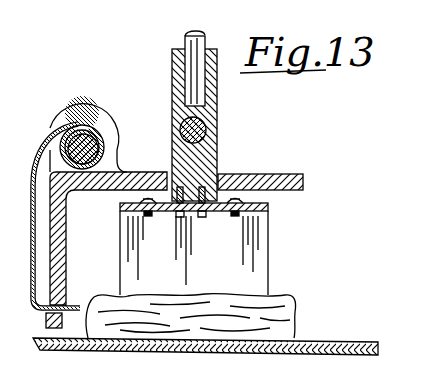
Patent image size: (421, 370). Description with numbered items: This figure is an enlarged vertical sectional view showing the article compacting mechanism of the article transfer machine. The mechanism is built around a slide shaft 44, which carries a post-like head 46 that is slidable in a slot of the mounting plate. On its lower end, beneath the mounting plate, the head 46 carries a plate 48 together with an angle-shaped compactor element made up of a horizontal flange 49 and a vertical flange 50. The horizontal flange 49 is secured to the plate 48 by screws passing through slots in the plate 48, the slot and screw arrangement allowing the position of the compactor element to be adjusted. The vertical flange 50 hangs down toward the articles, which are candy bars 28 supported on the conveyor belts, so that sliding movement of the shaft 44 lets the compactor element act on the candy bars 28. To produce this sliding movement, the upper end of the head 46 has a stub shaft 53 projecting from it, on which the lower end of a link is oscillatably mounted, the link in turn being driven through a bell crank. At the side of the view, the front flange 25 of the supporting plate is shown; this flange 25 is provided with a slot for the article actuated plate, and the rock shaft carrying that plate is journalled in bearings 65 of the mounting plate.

The front flange 25 is at (60, 266).
The candy bar 28 is at (296, 320).
The slide shaft 44 is at (206, 127).
The post-like head 46 is at (216, 152).
The plate 48 is at (266, 176).
The horizontal flange 49 is at (268, 210).
The vertical flange 50 is at (257, 269).
The stub shaft 53 is at (205, 36).
The bearings 65 is at (103, 128).